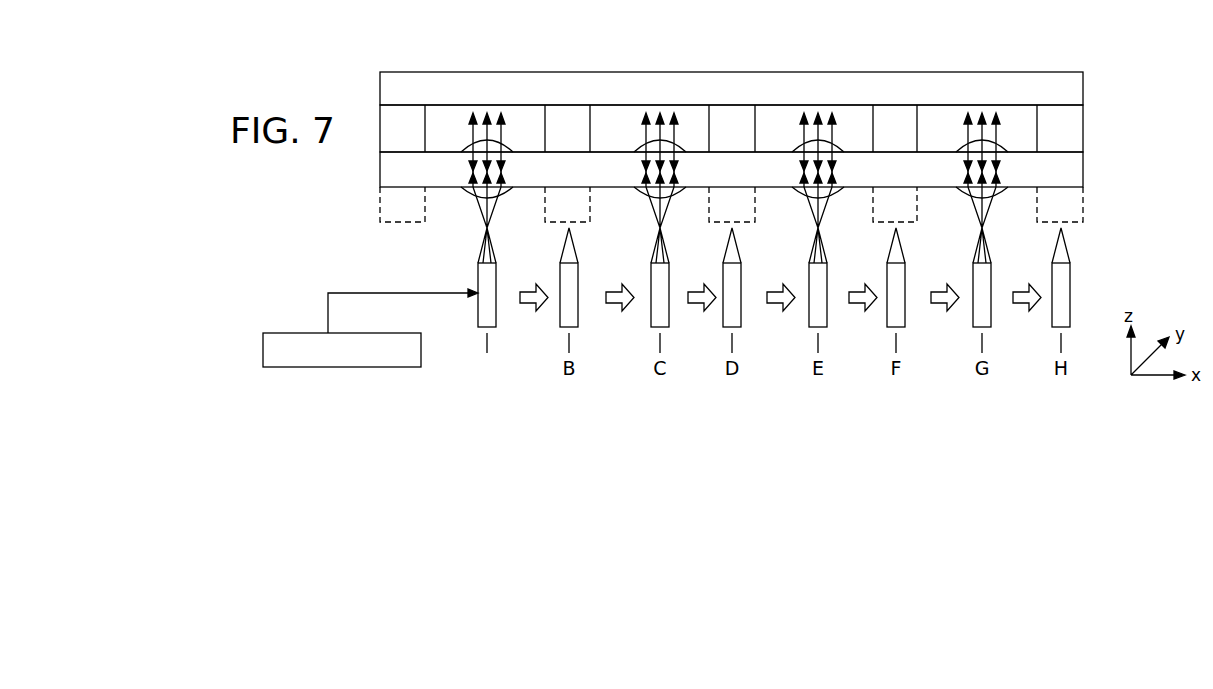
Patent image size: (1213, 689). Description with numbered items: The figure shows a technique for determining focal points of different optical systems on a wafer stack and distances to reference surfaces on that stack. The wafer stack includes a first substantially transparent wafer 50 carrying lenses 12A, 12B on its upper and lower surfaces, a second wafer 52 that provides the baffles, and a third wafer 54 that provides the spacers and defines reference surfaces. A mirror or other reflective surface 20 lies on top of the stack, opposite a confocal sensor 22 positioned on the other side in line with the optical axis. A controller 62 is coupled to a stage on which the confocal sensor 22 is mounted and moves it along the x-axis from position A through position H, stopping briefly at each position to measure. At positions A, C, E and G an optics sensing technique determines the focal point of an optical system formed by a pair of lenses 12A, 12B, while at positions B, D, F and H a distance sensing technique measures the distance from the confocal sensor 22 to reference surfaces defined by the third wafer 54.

The reflective surface 20 is at (1086, 90).
The second wafer 52 is at (1100, 133).
The first wafer 50 is at (1100, 176).
The third wafer 54 is at (1098, 218).
The lens 12A is at (508, 150).
The lens 12B is at (470, 196).
The confocal sensor 22 is at (477, 316).
The controller 62 is at (290, 332).